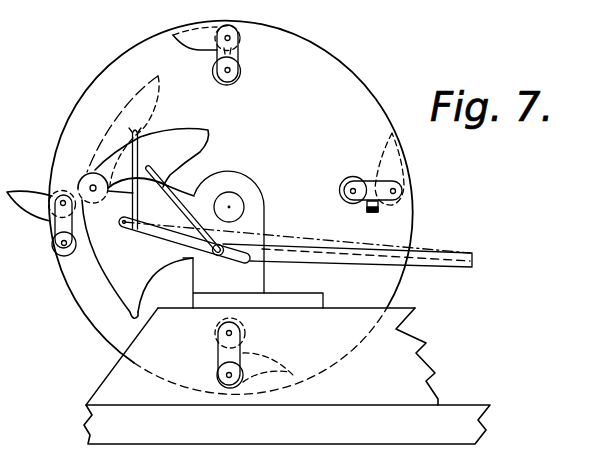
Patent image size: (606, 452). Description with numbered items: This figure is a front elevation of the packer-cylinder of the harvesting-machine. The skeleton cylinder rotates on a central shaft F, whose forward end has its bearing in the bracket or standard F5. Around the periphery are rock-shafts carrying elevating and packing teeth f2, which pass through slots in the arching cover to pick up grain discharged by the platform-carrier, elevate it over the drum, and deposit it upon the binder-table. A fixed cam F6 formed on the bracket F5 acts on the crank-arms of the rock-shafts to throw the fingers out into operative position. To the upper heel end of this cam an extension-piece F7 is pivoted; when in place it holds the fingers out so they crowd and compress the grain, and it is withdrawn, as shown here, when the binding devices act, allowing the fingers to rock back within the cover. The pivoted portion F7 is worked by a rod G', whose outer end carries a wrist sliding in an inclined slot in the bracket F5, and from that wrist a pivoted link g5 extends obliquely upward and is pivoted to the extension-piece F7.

The elevating and packing teeth f2 is at (188, 50).
The central shaft F is at (233, 203).
The bracket or standard F5 is at (252, 211).
The fixed cam F6 is at (115, 253).
The extension-piece F7 is at (169, 149).
The pivoted link g5 is at (294, 230).
The rod G' is at (347, 245).